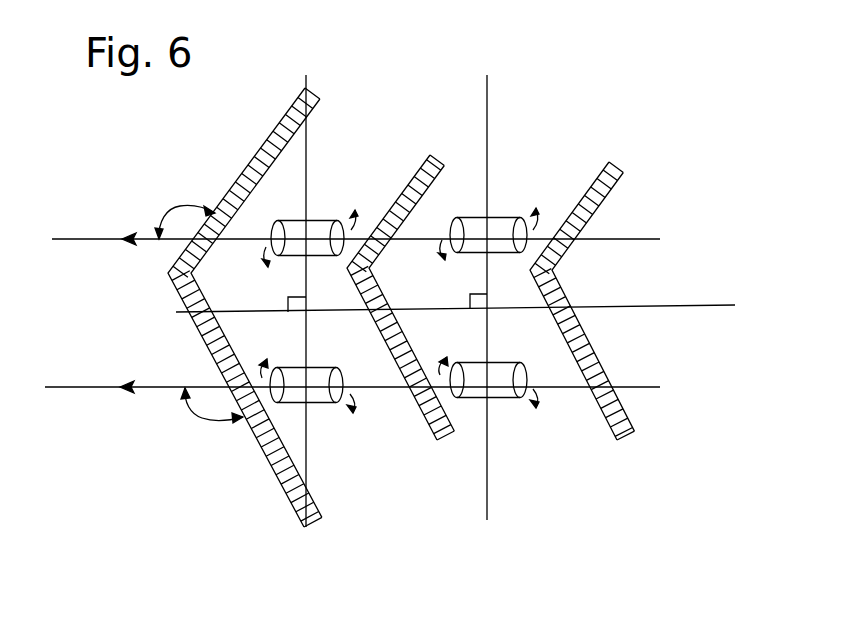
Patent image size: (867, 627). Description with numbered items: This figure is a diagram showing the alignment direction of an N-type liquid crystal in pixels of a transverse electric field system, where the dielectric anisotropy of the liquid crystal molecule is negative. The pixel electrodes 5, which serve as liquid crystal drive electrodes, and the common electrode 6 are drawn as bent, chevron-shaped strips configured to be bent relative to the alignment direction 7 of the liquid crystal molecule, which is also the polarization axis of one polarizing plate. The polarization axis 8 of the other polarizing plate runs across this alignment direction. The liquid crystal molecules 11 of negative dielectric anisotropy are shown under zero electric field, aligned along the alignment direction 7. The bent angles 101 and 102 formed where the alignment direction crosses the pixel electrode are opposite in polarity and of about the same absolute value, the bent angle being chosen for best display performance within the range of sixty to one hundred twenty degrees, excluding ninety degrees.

The pixel electrode 5 is at (262, 448).
The common electrode 6 is at (421, 407).
The alignment direction of the liquid crystal molecule 7 is at (69, 238).
The polarization axis of the other polarizing plate 8 is at (392, 279).
The bent angle 101 is at (212, 209).
The bent angle 102 is at (211, 426).
The N-type liquid crystal molecule 11 is at (533, 205).